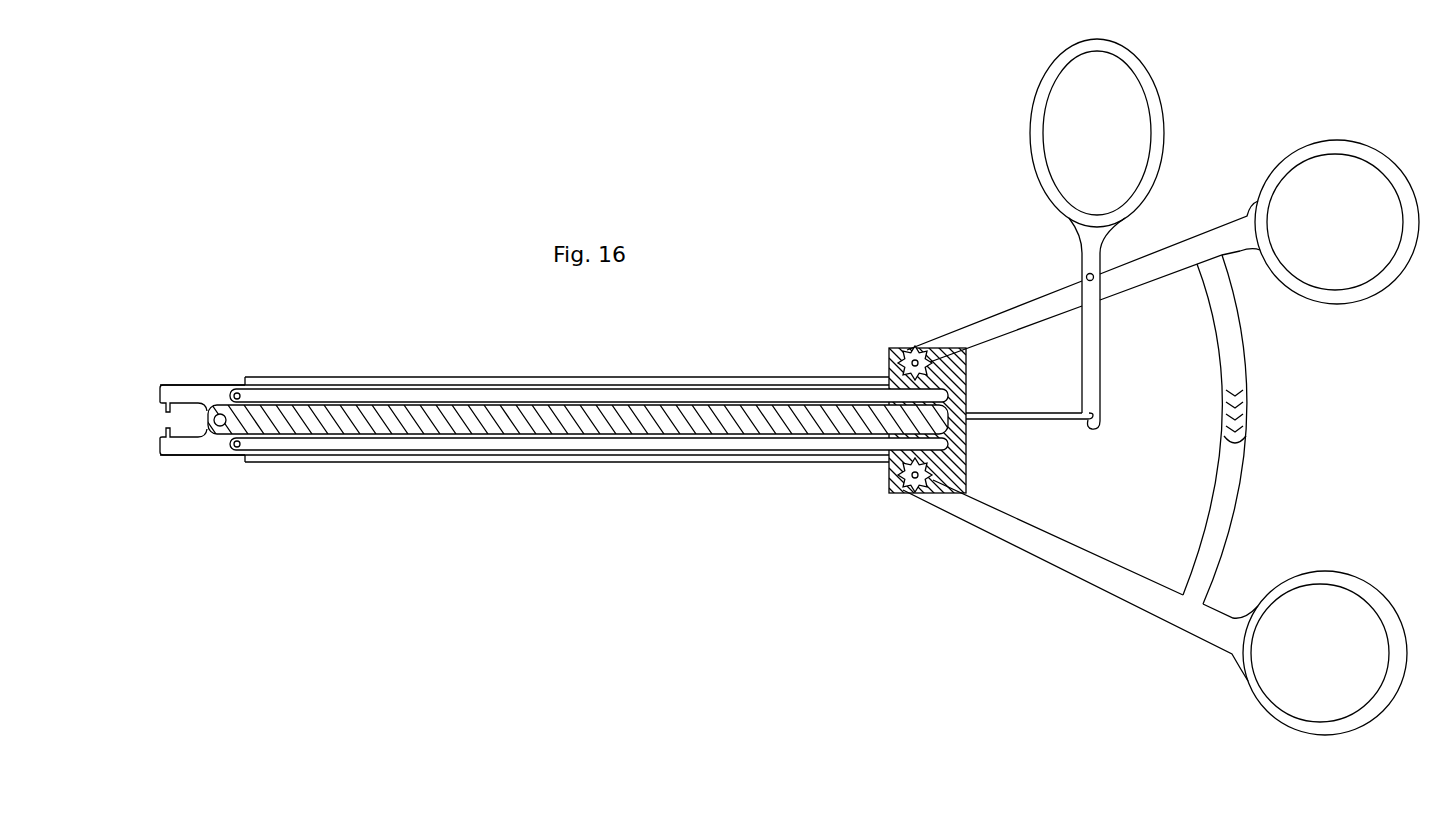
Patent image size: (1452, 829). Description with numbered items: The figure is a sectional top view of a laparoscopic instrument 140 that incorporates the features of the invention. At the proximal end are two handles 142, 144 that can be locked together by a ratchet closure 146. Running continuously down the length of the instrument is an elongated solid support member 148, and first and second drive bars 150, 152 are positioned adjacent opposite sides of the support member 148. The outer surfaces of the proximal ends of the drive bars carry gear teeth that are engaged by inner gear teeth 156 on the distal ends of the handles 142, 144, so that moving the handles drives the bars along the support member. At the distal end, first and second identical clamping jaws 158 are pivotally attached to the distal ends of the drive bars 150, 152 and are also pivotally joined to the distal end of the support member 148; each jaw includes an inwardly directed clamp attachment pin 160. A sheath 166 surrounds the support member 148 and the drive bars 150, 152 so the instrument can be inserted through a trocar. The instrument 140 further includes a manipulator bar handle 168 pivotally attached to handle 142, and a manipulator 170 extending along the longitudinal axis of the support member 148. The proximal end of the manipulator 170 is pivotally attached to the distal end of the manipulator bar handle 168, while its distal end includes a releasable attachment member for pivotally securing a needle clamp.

The laproscopic instrument 140 is at (983, 288).
The proximal handle 142 is at (1297, 160).
The proximal handle 144 is at (1333, 575).
The ratchet closure 146 is at (1240, 402).
The elongated solid support member 148 is at (955, 425).
The first drive bar 150 is at (418, 395).
The second drive bar 152 is at (418, 440).
The inner gear teeth 156 is at (905, 350).
The clamping jaw 158 is at (915, 490).
The clamp attachment pin 160 is at (160, 433).
The sheath 166 is at (640, 455).
The manipulator bar handle 168 is at (1048, 88).
The manipulator 170 is at (1062, 420).